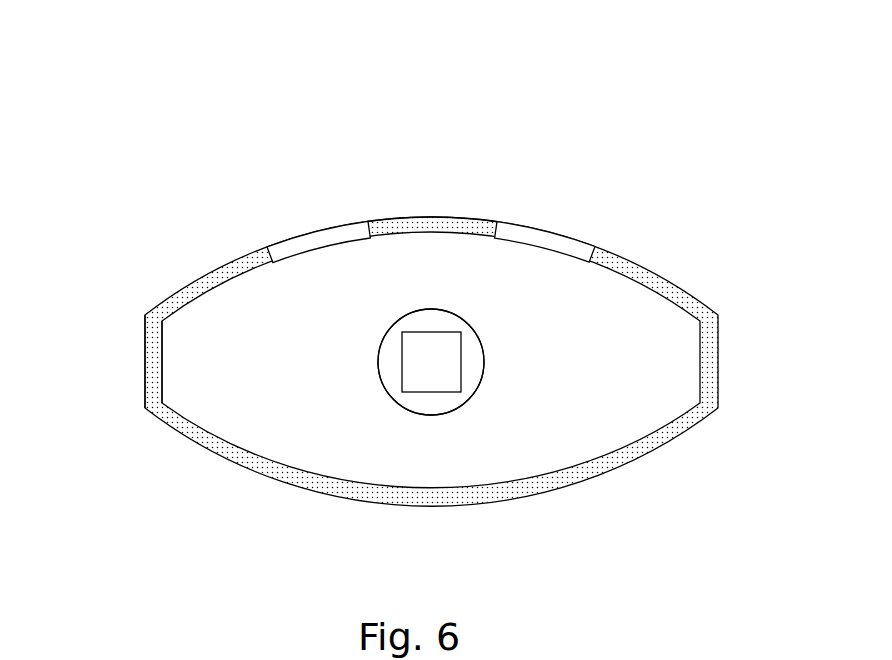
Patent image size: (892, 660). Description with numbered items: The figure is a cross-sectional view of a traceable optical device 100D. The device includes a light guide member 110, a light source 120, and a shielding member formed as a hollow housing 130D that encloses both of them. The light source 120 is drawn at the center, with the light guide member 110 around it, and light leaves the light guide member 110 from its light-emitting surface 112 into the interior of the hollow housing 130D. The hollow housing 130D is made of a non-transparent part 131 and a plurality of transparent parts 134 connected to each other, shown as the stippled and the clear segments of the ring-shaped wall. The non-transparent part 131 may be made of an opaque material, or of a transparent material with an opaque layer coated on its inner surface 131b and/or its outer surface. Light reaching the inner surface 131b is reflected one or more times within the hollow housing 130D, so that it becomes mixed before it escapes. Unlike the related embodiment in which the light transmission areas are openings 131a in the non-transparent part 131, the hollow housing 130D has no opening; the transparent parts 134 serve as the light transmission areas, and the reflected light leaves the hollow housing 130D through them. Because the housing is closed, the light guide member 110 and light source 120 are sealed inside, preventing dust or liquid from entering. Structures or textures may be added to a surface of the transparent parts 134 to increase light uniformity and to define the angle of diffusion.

The traceable optical device 100D is at (92, 56).
The light guide member 110 is at (392, 377).
The light-emitting surface 112 is at (405, 412).
The light source 120 is at (431, 378).
The hollow housing 130D is at (335, 178).
The non-transparent part 131 is at (247, 256).
The openings 131a is at (373, 208).
The inner surface 131b is at (162, 356).
The transparent parts 134 is at (303, 240).